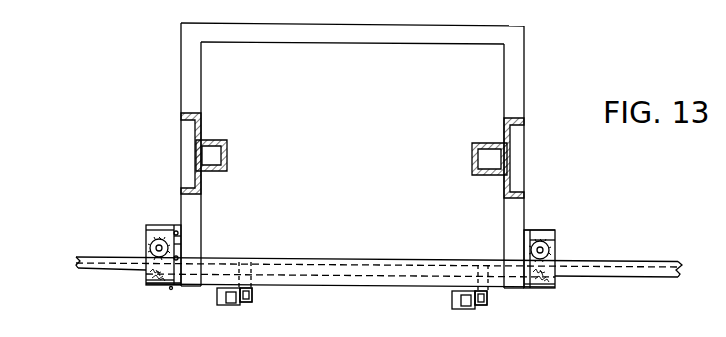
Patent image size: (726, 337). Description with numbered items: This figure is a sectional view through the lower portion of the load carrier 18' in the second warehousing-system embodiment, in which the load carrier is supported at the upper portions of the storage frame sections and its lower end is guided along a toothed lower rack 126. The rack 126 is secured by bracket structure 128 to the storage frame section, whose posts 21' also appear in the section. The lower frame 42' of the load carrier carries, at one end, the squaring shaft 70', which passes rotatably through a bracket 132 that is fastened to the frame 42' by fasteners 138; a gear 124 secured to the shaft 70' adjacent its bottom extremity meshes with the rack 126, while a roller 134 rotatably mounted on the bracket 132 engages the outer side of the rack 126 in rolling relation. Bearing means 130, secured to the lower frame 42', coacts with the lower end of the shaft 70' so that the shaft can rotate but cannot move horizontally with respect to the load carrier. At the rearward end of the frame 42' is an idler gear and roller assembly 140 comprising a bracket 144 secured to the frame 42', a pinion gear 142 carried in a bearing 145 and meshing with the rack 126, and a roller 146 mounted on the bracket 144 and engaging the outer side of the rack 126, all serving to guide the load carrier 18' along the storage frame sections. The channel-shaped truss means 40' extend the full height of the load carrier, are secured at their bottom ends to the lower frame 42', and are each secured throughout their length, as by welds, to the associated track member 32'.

The load carrier 18' is at (377, 144).
The lower frame 42' is at (352, 22).
The truss means 40' is at (352, 147).
The track member 32' is at (351, 159).
The lower rack 126 is at (85, 258).
The gear 124 is at (140, 244).
The squaring shaft 70' is at (135, 246).
The bearing means 130 is at (176, 238).
The fasteners 138 is at (173, 226).
The bracket 132 is at (148, 283).
The roller 134 is at (171, 290).
The post 21' is at (350, 299).
The bracket structure 128 is at (252, 296).
The bracket 144 is at (574, 238).
The idler gear and roller assembly 140 is at (558, 232).
The pinion gear 142 is at (556, 240).
The bearing 145 is at (556, 250).
The roller 146 is at (557, 284).